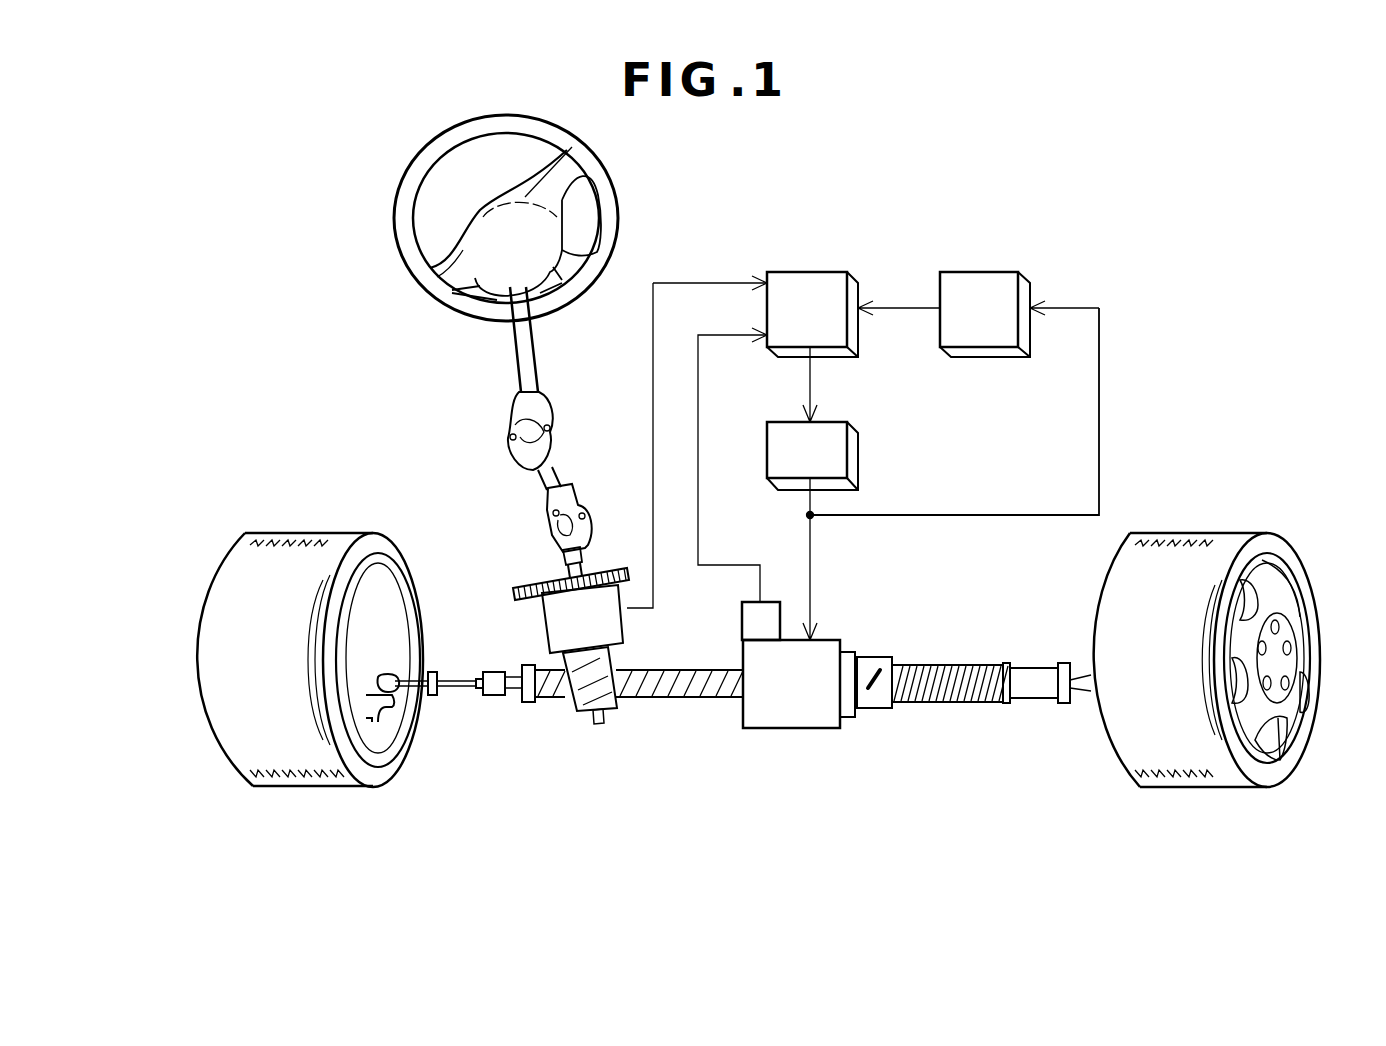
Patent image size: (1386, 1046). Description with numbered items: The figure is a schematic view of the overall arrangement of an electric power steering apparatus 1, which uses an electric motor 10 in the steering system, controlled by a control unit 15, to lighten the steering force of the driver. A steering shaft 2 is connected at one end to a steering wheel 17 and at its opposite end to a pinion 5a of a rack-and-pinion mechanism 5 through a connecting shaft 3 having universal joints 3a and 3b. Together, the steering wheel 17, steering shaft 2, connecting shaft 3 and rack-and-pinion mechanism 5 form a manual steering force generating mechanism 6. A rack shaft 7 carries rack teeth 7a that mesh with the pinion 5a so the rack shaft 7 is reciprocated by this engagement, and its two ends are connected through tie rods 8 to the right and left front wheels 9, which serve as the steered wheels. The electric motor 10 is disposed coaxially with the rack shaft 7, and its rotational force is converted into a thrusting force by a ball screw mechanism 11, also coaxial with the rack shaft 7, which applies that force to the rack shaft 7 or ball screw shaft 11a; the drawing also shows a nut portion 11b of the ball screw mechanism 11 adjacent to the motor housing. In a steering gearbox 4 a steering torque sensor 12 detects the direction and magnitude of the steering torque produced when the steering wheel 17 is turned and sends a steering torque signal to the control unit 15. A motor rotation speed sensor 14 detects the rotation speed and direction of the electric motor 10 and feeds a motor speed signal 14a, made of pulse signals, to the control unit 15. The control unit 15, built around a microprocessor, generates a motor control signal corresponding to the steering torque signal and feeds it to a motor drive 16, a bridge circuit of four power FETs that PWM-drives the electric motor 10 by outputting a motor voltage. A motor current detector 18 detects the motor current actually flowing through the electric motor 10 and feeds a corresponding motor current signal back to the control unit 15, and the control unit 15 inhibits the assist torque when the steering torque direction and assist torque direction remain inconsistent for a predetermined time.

The electric power steering apparatus 1 is at (751, 186).
The steering shaft 2 is at (520, 360).
The connecting shaft 3 is at (548, 472).
The universal joint 3a is at (545, 410).
The universal joint 3b is at (555, 500).
The steering gearbox 4 is at (575, 713).
The rack-and-pinion mechanism 5 is at (557, 700).
The pinion 5a is at (620, 700).
The manual steering force generating mechanism 6 is at (500, 418).
The rack shaft 7 is at (1040, 700).
The rack teeth 7a is at (680, 700).
The tie rod 8 is at (415, 680).
The front wheel 9 is at (285, 532).
The electric motor 10 is at (815, 728).
The ball screw mechanism 11 is at (920, 665).
The ball screw shaft 11a is at (945, 702).
The ball nut 11b is at (877, 708).
The steering torque sensor 12 is at (545, 633).
The motor rotation speed sensor 14 is at (742, 622).
The motor speed signal 14a is at (698, 386).
The control unit 15 is at (808, 272).
The motor drive 16 is at (858, 455).
The steering wheel 17 is at (397, 228).
The motor current detector 18 is at (975, 272).